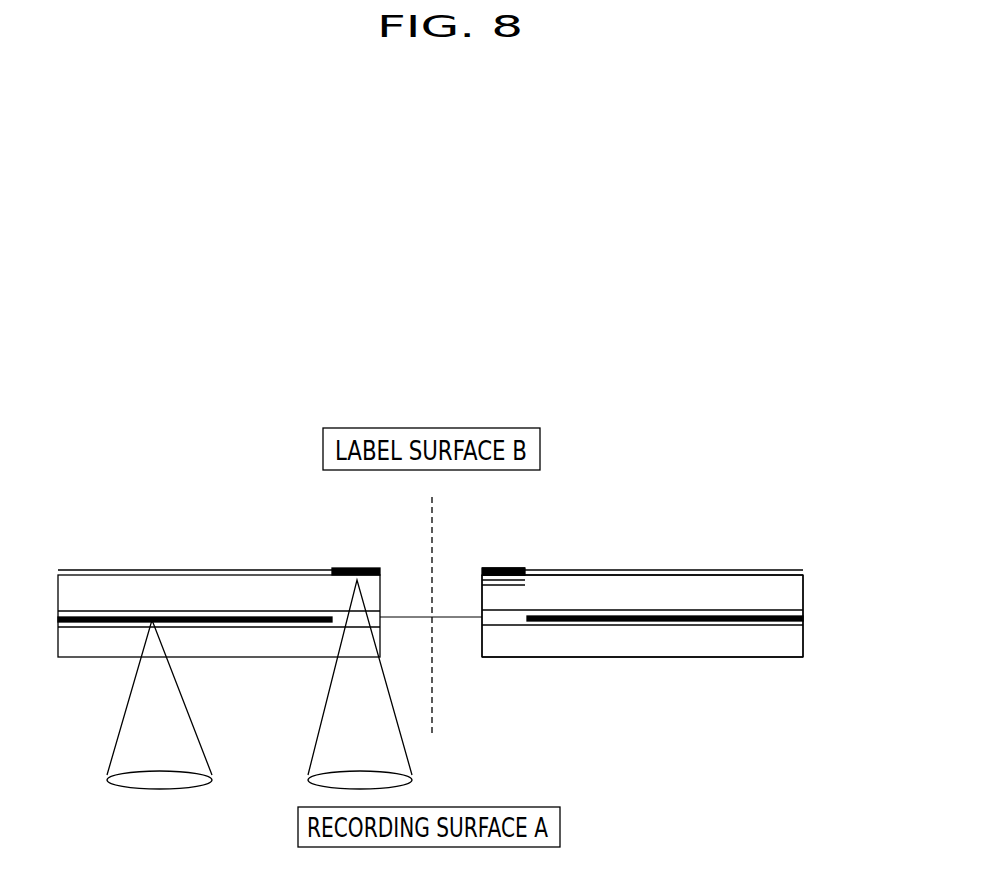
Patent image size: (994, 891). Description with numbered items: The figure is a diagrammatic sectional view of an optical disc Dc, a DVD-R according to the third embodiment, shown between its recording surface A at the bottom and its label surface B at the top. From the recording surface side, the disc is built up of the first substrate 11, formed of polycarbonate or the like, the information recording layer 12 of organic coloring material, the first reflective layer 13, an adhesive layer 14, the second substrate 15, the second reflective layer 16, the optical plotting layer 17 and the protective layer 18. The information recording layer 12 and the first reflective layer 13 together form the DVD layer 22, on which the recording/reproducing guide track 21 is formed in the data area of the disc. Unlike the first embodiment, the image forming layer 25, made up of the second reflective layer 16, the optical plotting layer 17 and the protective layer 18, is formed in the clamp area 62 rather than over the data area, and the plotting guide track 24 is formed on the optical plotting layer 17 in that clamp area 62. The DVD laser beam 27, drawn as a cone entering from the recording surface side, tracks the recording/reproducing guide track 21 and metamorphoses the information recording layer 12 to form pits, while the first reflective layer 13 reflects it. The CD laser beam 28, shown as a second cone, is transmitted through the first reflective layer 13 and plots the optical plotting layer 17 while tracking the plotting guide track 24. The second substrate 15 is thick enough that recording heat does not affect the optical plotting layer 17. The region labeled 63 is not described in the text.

The optical disc Dc is at (514, 391).
The first substrate 11 is at (705, 645).
The information recording layer 12 is at (805, 622).
The first reflective layer 13 is at (805, 618).
The adhesive layer 14 is at (805, 610).
The second substrate 15 is at (792, 597).
The second reflective layer 16 is at (528, 586).
The optical plotting layer 17 is at (526, 577).
The protective layer 18 is at (488, 566).
The recording/reproducing guide track 21 is at (628, 635).
The DVD layer 22 is at (883, 625).
The plotting guide track 24 is at (483, 591).
The image forming layer 25 is at (612, 502).
The DVD laser beam 27 is at (125, 710).
The CD laser beam 28 is at (327, 705).
The clamp area 62 is at (380, 553).
The recording area 63 is at (328, 553).